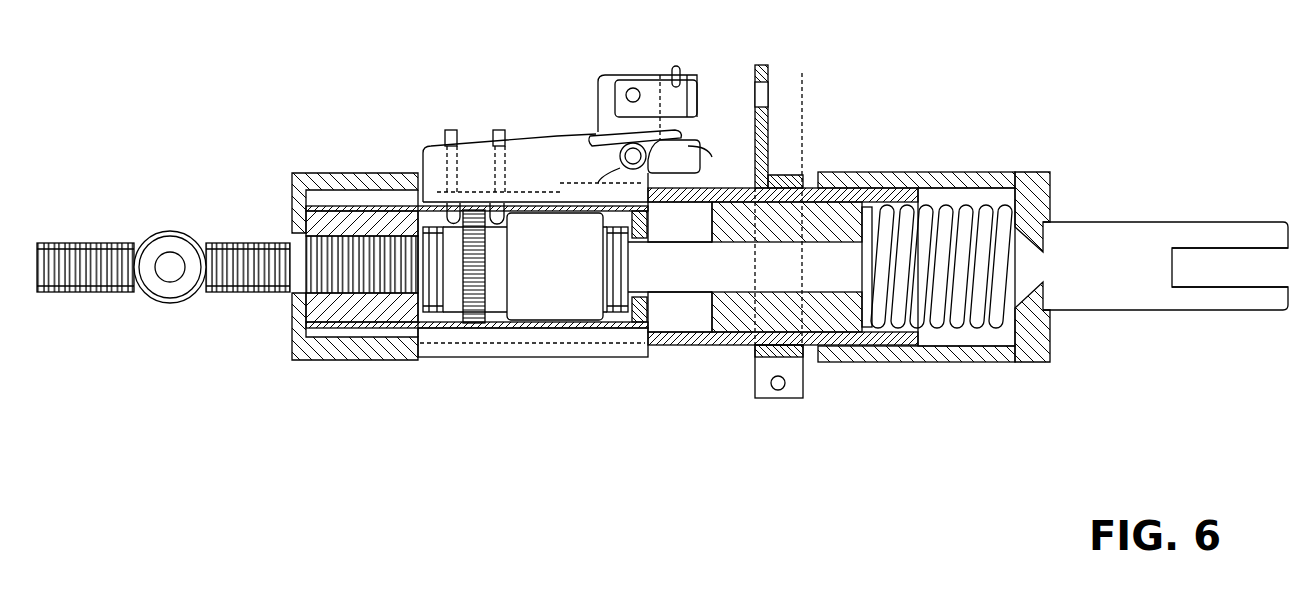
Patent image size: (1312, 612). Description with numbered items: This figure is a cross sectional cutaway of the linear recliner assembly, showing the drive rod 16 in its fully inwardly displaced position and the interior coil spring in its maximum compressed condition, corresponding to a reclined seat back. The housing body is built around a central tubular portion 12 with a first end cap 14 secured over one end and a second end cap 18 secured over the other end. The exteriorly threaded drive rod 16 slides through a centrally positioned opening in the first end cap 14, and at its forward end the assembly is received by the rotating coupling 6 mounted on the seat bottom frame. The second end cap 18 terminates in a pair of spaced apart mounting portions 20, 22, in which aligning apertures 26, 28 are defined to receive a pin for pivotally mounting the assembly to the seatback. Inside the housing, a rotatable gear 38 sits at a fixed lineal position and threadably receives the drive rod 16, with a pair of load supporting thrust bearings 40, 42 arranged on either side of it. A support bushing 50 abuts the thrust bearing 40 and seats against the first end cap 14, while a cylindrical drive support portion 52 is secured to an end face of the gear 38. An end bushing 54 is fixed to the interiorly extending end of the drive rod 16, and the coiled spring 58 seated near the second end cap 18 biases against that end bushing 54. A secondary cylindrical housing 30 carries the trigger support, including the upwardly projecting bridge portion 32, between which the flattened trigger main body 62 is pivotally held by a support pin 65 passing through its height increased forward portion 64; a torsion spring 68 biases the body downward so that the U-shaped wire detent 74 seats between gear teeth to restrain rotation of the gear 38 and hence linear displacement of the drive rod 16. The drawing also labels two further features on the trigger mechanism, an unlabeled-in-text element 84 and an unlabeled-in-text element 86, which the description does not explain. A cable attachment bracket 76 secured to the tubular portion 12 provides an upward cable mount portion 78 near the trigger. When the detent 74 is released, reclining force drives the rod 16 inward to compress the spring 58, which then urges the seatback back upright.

The rotating coupling 6 is at (160, 290).
The central tubular portion 12 is at (715, 347).
The first end cap 14 is at (342, 172).
The drive rod 16 is at (78, 243).
The second end cap 18 is at (976, 172).
The mounting portion 20 is at (1200, 224).
The mounting portion 22 is at (1193, 312).
The aligning aperture 26 is at (1248, 222).
The aligning aperture 28 is at (1245, 311).
The secondary cylindrical shaped housing 30 is at (533, 322).
The bridge portion 32 is at (697, 138).
The rotatable gear 38 is at (470, 325).
The thrust bearing 40 is at (433, 325).
The thrust bearing 42 is at (620, 325).
The support bushing 50 is at (345, 217).
The drive support portion 52 is at (565, 312).
The end bushing 54 is at (832, 213).
The coiled spring 58 is at (992, 327).
The main body 62 is at (533, 152).
The forward portion 64 is at (605, 88).
The support pin 65 is at (700, 150).
The torsion spring 68 is at (603, 138).
The detent 74 is at (448, 130).
The cable attachment bracket 76 is at (783, 357).
The cable mount portion 78 is at (770, 82).
The pin 84 is at (678, 66).
The aperture 86 is at (633, 88).